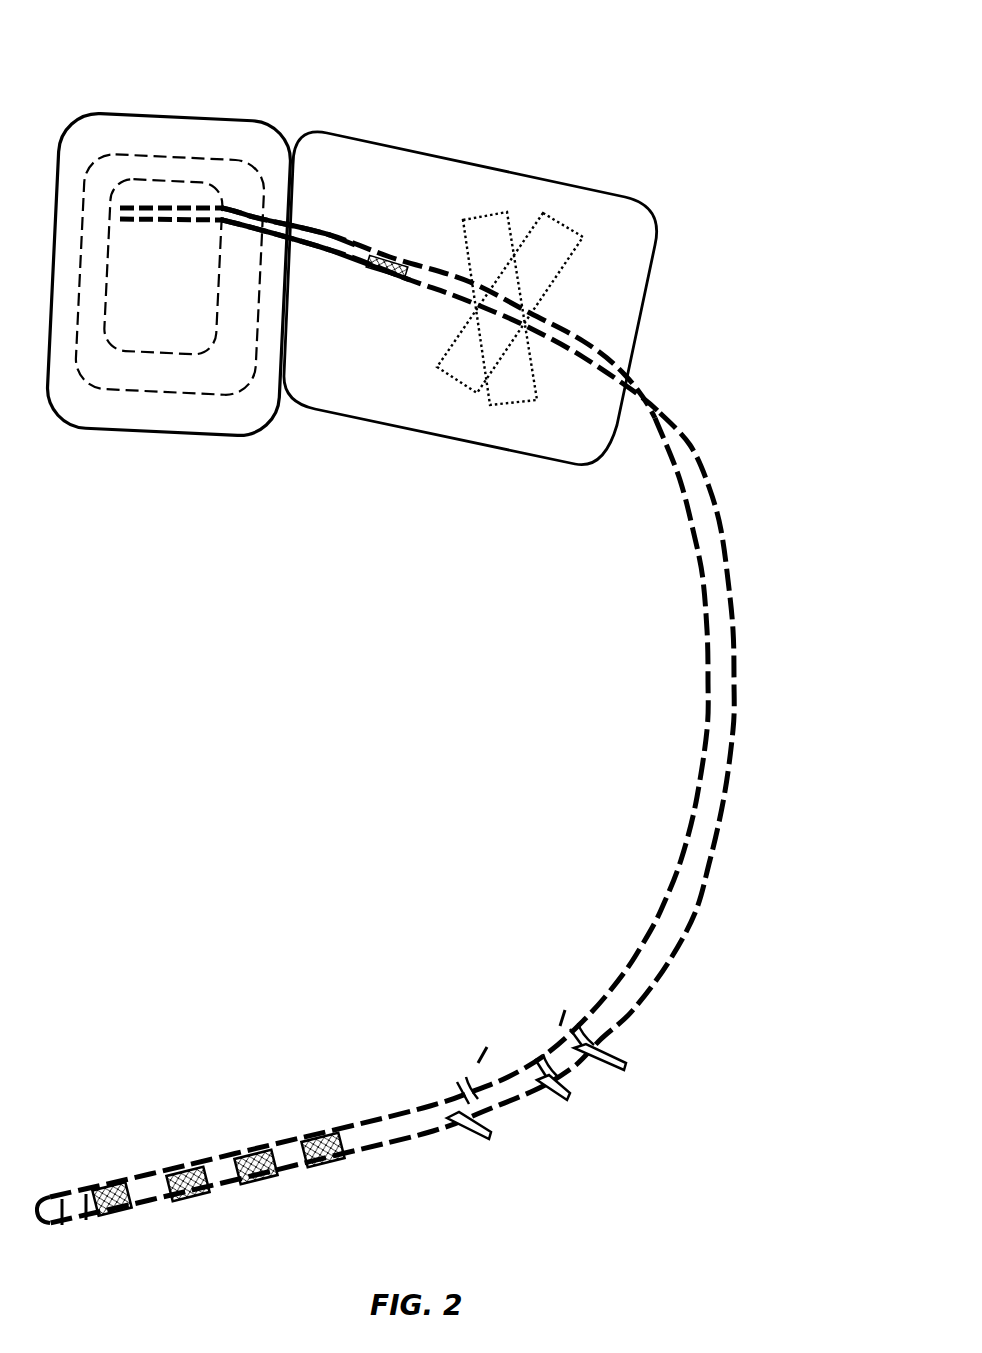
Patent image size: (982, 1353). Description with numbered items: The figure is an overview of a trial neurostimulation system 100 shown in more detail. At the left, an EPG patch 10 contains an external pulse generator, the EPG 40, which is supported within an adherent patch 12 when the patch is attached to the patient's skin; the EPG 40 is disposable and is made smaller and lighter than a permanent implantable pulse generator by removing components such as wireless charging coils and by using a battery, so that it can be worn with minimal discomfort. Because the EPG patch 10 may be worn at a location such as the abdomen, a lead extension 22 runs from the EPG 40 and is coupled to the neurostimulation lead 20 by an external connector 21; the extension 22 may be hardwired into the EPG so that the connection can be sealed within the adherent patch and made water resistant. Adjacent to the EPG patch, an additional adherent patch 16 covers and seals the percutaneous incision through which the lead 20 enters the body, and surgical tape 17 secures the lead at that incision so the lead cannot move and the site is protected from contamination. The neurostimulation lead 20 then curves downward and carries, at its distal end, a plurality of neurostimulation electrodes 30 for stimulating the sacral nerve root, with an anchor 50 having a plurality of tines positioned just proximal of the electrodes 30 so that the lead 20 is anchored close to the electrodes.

The EPG patch 10 is at (59, 72).
The adherent patch 12 is at (115, 405).
The additional adherent patch 16 is at (438, 410).
The surgical tape 17 is at (520, 397).
The neurostimulation lead 20 is at (667, 940).
The external connector 21 is at (390, 257).
The lead extension 22 is at (333, 247).
The neurostimulation electrodes 30 is at (283, 1130).
The EPG 40 is at (208, 258).
The anchor 50 is at (557, 1093).
The neurostimulation system 100 is at (777, 150).